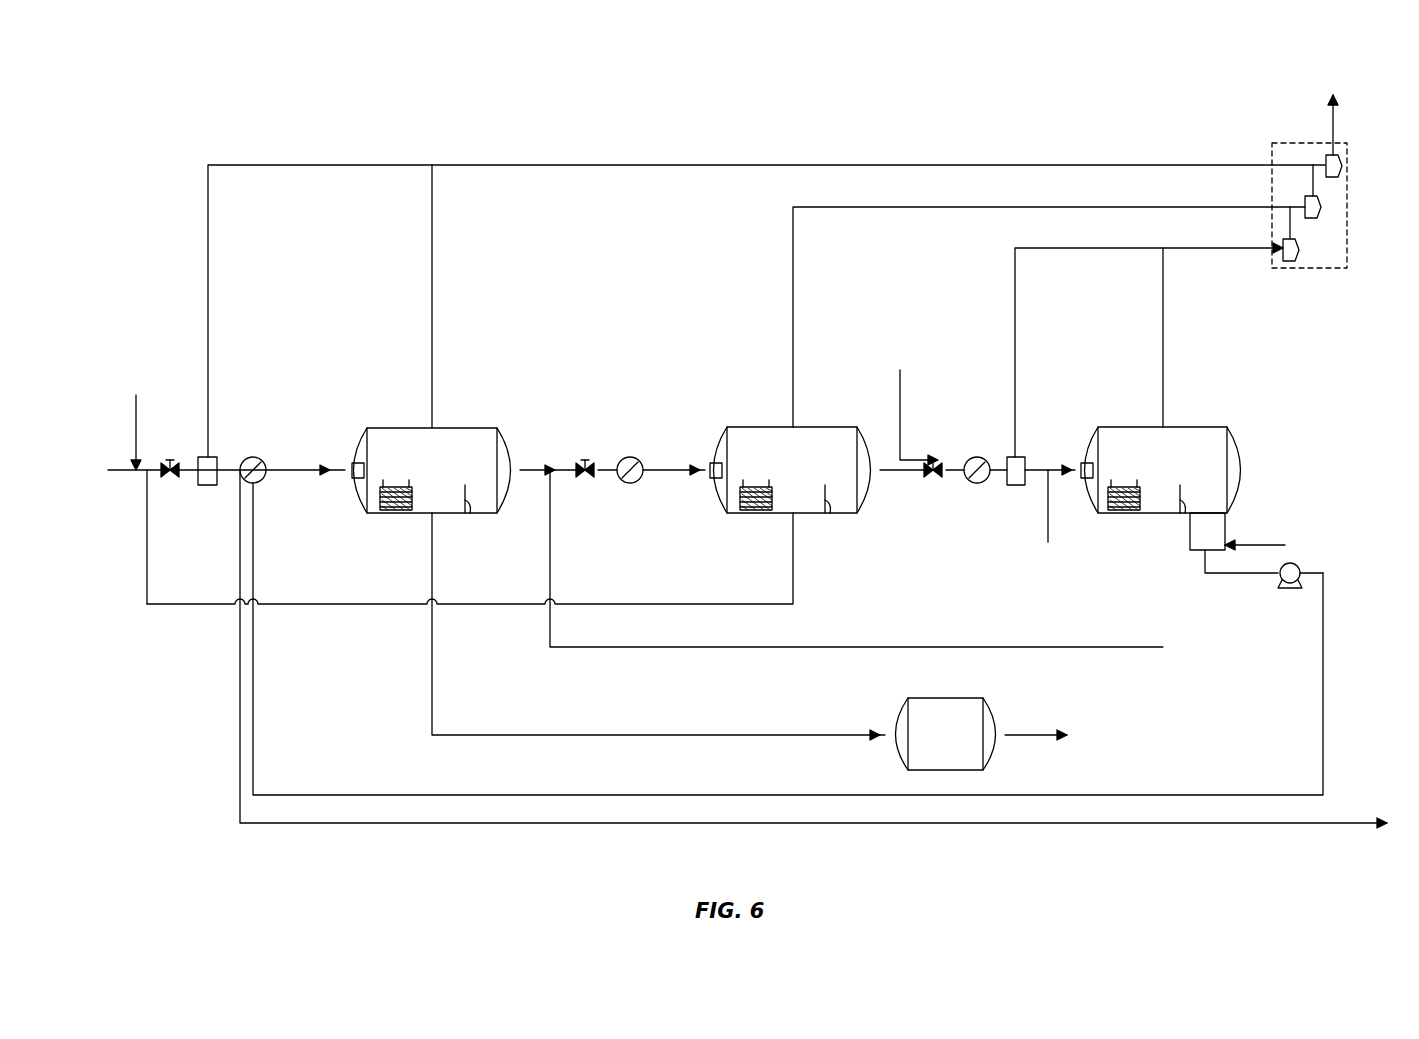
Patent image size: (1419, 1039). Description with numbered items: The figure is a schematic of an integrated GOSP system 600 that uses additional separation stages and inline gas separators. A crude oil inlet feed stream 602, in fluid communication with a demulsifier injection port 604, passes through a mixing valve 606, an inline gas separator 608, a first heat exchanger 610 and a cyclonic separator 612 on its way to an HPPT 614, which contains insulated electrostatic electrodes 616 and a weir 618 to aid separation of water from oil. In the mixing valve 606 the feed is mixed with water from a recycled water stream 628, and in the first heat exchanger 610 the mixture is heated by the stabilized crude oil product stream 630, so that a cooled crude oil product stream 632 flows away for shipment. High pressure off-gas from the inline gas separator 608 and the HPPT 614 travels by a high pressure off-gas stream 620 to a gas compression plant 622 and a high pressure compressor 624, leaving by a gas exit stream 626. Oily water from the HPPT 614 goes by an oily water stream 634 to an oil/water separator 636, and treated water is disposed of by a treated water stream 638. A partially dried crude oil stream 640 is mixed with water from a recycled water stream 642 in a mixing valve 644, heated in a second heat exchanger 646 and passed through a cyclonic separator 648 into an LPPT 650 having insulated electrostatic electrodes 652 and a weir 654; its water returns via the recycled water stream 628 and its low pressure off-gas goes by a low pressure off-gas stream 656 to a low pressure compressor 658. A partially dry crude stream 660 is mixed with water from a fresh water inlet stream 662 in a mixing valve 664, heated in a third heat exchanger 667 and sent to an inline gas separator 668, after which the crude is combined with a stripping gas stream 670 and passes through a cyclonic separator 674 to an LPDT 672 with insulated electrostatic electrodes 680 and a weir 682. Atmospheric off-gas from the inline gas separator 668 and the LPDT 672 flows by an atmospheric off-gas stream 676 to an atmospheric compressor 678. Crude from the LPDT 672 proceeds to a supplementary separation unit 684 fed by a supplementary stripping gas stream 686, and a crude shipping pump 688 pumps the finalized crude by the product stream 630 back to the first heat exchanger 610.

The integrated GOSP system 600 is at (983, 95).
The crude oil inlet feed stream 602 is at (197, 471).
The demulsifier injection port 604 is at (130, 405).
The mixing valve 606 is at (169, 460).
The inline gas separator 608 is at (209, 488).
The first heat exchanger 610 is at (259, 457).
The cyclonic separator 612 is at (355, 480).
The HPPT 614 is at (455, 468).
The insulated electrostatic electrodes 616 is at (395, 512).
The weir 618 is at (470, 505).
The high pressure off-gas stream 620 is at (530, 160).
The gas compression plant 622 is at (1290, 143).
The high pressure compressor 624 is at (1342, 178).
The gas exit stream 626 is at (1340, 105).
The recycled water stream 628 is at (638, 602).
The stabilized crude oil product stream 630 is at (1320, 712).
The cooled crude oil product stream 632 is at (1283, 826).
The oily water stream 634 is at (432, 680).
The oil/water separator 636 is at (968, 748).
The treated water stream 638 is at (1050, 730).
The partially dried crude oil stream 640 is at (537, 465).
The recycled water stream 642 is at (860, 650).
The mixing valve 644 is at (585, 460).
The second heat exchanger 646 is at (632, 485).
The cyclonic separator 648 is at (712, 482).
The LPPT 650 is at (815, 468).
The insulated electrostatic electrodes 652 is at (760, 512).
The weir 654 is at (830, 515).
The low pressure off-gas stream 656 is at (838, 212).
The low pressure compressor 658 is at (1320, 218).
The partially dry crude stream 660 is at (890, 480).
The fresh water inlet stream 662 is at (900, 385).
The mixing valve 664 is at (933, 460).
The third heat exchanger 667 is at (968, 457).
The inline gas separator 668 is at (1015, 487).
The stripping gas stream 670 is at (1046, 525).
The LPDT 672 is at (1185, 468).
The cyclonic separator 674 is at (1095, 460).
The atmospheric off-gas stream 676 is at (1192, 250).
The atmospheric compressor 678 is at (1295, 262).
The insulated electrostatic electrodes 680 is at (1125, 512).
The weir 682 is at (1210, 490).
The supplementary separation unit 684 is at (1228, 540).
The supplementary stripping gas stream 686 is at (1273, 545).
The crude shipping pump 688 is at (1287, 587).